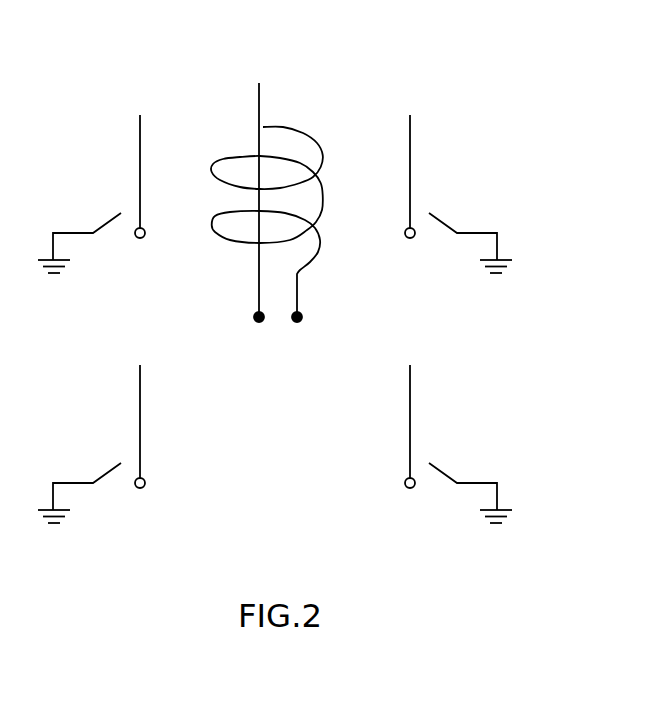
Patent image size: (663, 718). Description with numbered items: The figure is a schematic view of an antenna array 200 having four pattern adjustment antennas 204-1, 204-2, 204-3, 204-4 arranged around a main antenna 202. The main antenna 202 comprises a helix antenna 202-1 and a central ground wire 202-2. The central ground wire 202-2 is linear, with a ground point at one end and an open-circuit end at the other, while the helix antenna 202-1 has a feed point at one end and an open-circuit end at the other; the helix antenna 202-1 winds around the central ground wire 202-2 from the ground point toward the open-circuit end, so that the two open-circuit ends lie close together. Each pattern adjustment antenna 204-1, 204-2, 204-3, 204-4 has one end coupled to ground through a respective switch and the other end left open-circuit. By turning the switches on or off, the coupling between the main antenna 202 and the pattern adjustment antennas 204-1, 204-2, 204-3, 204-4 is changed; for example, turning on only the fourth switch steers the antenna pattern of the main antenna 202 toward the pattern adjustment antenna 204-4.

The antenna array 200 is at (300, 298).
The main antenna 202 is at (273, 189).
The helix antenna 202-1 is at (320, 142).
The central ground wire 202-2 is at (223, 135).
The pattern adjustment antenna 204-1 is at (128, 393).
The pattern adjustment antenna 204-2 is at (128, 143).
The pattern adjustment antenna 204-3 is at (422, 143).
The pattern adjustment antenna 204-4 is at (422, 393).